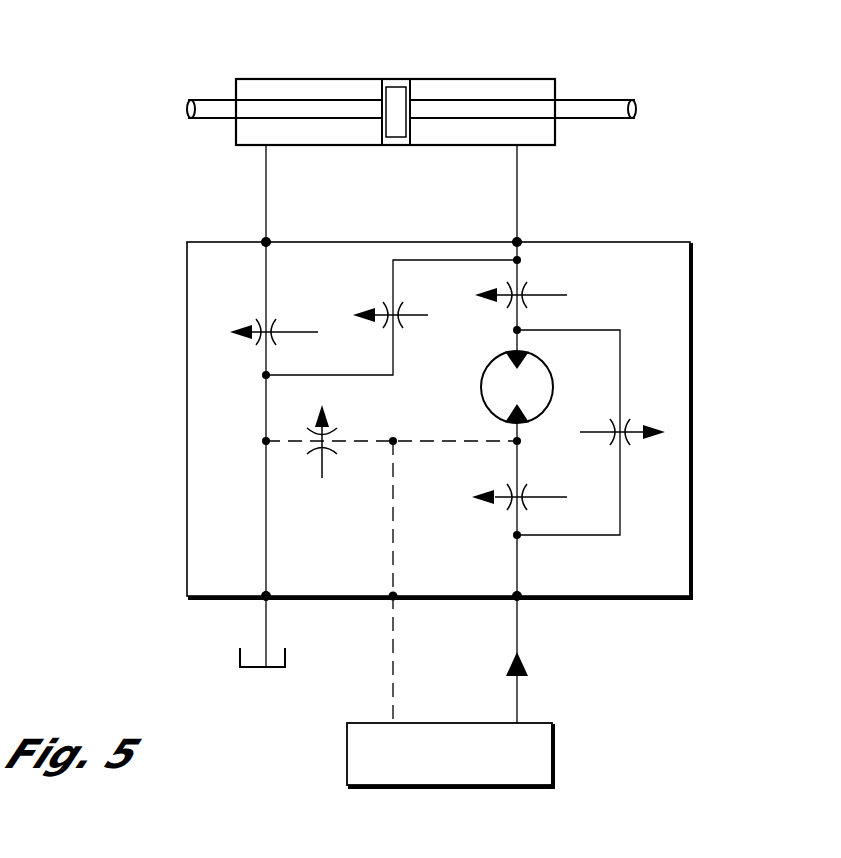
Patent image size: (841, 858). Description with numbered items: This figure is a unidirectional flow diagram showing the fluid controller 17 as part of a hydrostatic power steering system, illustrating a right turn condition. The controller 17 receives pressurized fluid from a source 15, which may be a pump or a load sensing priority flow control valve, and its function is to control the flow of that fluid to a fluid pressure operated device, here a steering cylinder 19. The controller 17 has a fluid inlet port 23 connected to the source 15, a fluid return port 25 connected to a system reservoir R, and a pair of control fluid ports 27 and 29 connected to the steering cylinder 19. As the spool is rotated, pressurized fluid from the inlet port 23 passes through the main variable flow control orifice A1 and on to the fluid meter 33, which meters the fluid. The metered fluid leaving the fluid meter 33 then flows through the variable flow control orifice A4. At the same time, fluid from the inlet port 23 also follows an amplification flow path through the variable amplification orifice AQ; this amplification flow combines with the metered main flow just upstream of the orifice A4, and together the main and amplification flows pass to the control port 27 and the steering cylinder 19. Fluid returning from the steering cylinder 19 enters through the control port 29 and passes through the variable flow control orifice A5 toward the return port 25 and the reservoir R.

The source 15 is at (575, 735).
The fluid controller 17 is at (175, 272).
The steering cylinder 19 is at (318, 78).
The fluid inlet port 23 is at (518, 597).
The fluid return port 25 is at (266, 597).
The control fluid port 27 is at (266, 242).
The control fluid port 29 is at (517, 242).
The fluid meter 33 is at (482, 369).
The main variable flow control orifice A1 is at (506, 484).
The variable flow control orifice A4 is at (510, 306).
The variable flow control orifice A5 is at (270, 318).
The variable amplification orifice AQ is at (630, 418).
The system reservoir R is at (240, 650).